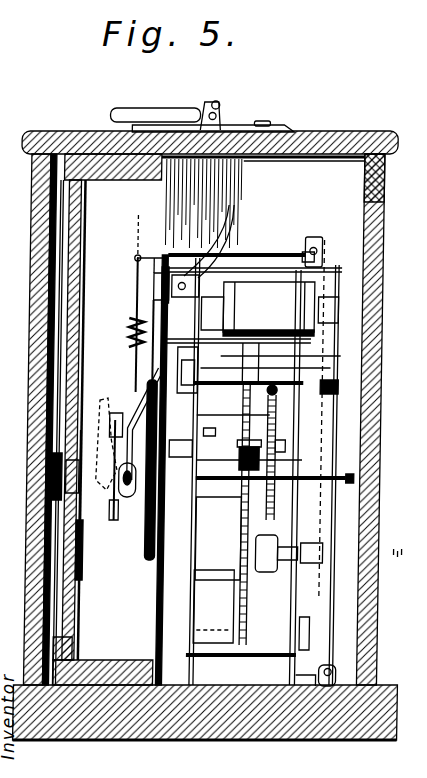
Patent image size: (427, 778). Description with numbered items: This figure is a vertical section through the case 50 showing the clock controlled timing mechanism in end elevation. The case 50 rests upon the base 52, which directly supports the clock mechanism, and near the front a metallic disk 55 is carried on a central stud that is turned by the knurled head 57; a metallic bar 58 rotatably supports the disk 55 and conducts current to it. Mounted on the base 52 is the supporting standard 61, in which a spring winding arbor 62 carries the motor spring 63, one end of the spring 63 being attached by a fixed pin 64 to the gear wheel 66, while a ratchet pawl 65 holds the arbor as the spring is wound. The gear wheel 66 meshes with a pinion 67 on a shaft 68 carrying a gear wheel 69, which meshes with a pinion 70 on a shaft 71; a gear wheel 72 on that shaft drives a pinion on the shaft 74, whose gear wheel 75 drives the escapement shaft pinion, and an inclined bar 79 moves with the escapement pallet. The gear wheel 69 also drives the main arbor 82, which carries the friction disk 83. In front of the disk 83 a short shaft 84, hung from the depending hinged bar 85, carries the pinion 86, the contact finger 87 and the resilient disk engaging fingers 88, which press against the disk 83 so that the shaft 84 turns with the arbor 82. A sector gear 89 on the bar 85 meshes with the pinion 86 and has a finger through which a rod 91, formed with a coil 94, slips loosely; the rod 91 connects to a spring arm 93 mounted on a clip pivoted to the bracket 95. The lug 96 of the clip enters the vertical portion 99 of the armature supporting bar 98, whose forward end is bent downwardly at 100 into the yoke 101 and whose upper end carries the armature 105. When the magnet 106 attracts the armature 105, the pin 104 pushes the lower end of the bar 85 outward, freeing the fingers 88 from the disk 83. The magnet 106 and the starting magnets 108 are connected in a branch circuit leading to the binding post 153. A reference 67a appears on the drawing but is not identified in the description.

The case 50 is at (375, 250).
The base 52 is at (256, 700).
The metallic disk 55 is at (90, 567).
The knurled head 57 is at (30, 268).
The metallic bar 58 is at (91, 372).
The supporting standard 61 is at (303, 423).
The spring winding arbor 62 is at (270, 560).
The motor spring 63 is at (228, 514).
The fixed pin 64 is at (213, 606).
The ratchet pawl 65 is at (303, 568).
The gear wheel 66 is at (248, 634).
The pinion 67 is at (253, 441).
The collar 67a is at (196, 430).
The shaft 68 is at (230, 447).
The gear wheel 69 is at (281, 445).
The pinion 70 is at (283, 393).
The shaft 71 is at (248, 399).
The gear wheel 72 is at (256, 353).
The shaft 74 is at (327, 385).
The gear wheel 75 is at (238, 355).
The inclined bar 79 is at (183, 452).
The main arbor 82 is at (352, 480).
The friction disk 83 is at (162, 533).
The short shaft 84 is at (114, 477).
The hinged bar 85 is at (157, 325).
The pinion 86 is at (129, 487).
The contact finger 87 is at (128, 410).
The disk engaging fingers 88 is at (152, 538).
The sector gear 89 is at (126, 455).
The rod 91 is at (133, 283).
The spring arm 93 is at (227, 241).
The coil 94 is at (312, 240).
The supporting bracket 95 is at (271, 255).
The lug 96 is at (315, 267).
The armature supporting bar 98 is at (339, 355).
The vertically disposed portion 99 is at (238, 277).
The downwardly bent end 100 is at (153, 268).
The yoke 101 is at (215, 245).
The pin 104 is at (327, 365).
The armature 105 is at (331, 300).
The magnet 106 is at (269, 307).
The starting magnets 108 is at (203, 203).
The binding post 153 is at (76, 236).